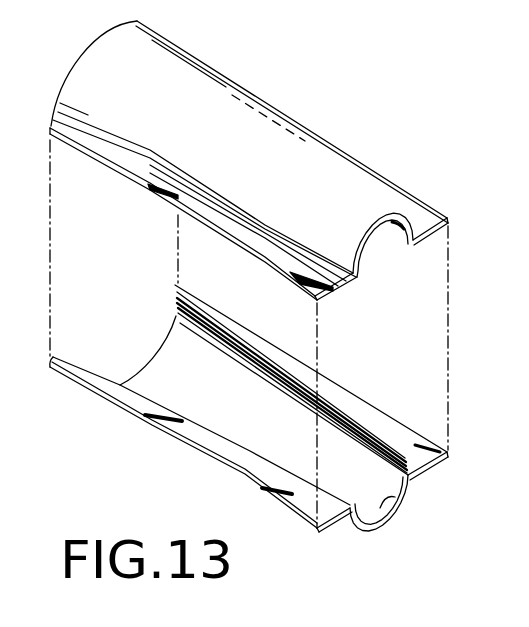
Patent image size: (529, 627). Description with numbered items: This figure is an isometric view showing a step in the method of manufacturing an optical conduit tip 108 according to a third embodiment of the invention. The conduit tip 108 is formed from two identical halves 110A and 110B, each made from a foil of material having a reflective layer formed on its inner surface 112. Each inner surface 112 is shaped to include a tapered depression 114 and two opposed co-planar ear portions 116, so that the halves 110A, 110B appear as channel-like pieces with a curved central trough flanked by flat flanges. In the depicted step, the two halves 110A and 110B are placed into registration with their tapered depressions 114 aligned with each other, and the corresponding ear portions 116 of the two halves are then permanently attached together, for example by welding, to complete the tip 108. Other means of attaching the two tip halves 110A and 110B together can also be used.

The optical conduit tip 108 is at (260, 98).
The tip half 110A is at (449, 458).
The tip half 110B is at (447, 216).
The inner surface 112 is at (414, 247).
The tapered depression 114 is at (382, 231).
The ear portion 116 is at (77, 152).